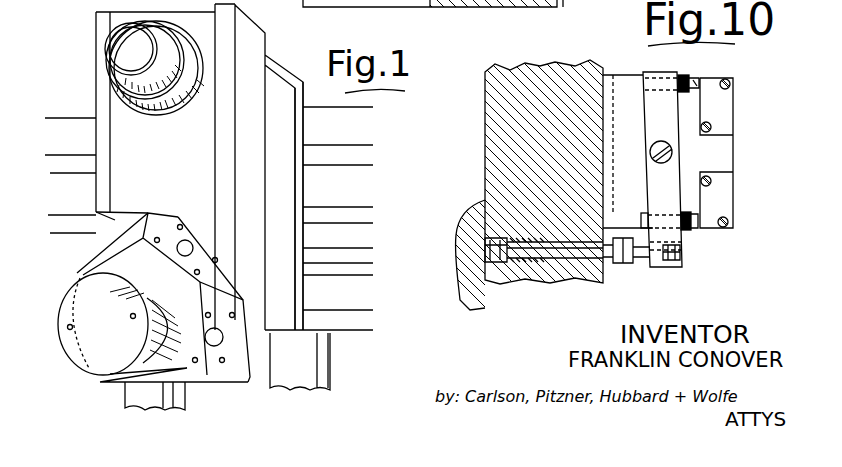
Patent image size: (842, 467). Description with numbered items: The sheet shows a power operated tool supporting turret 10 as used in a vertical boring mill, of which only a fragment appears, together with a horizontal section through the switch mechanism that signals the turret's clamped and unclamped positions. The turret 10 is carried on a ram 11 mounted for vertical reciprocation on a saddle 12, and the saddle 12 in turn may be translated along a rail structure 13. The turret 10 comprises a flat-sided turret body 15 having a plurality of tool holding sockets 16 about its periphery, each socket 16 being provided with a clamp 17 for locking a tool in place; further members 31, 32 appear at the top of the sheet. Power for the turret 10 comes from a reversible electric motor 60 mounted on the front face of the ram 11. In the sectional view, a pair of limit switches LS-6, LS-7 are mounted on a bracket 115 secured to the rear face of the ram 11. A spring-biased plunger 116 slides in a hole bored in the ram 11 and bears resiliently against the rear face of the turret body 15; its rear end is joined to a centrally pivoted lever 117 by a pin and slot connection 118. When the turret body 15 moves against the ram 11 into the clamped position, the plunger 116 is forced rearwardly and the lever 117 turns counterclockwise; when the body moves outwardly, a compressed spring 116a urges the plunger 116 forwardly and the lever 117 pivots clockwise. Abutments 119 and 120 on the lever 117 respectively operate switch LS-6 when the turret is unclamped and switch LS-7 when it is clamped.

In FIG. 1, the tool supporting turret 10 is at (63, 259).
In FIG. 1, the ram 11 is at (120, 122).
In FIG. 10, the ram 11 is at (492, 160).
In FIG. 1, the saddle 12 is at (283, 200).
In FIG. 1, the rail structure 13 is at (377, 153).
In FIG. 1, the turret body 15 is at (155, 218).
In FIG. 10, the turret body 15 is at (478, 305).
In FIG. 1, the tool holding sockets 16 is at (185, 245).
In FIG. 1, the clamp 17 is at (383, 3).
In FIG. 1, the member 31 is at (477, 5).
In FIG. 1, the member 32 is at (485, 3).
In FIG. 1, the reversible electric motor 60 is at (115, 50).
In FIG. 10, the bracket 115 is at (720, 155).
In FIG. 10, the spring-biased plunger 116 is at (578, 258).
In FIG. 10, the compressed spring 116a is at (525, 260).
In FIG. 10, the centrally pivoted lever 117 is at (655, 117).
In FIG. 10, the pin and slot connection 118 is at (682, 256).
In FIG. 10, the abutment 119 is at (690, 80).
In FIG. 10, the abutment 120 is at (690, 230).
In FIG. 10, the limit switch LS-6 is at (720, 112).
In FIG. 10, the limit switch LS-7 is at (720, 205).